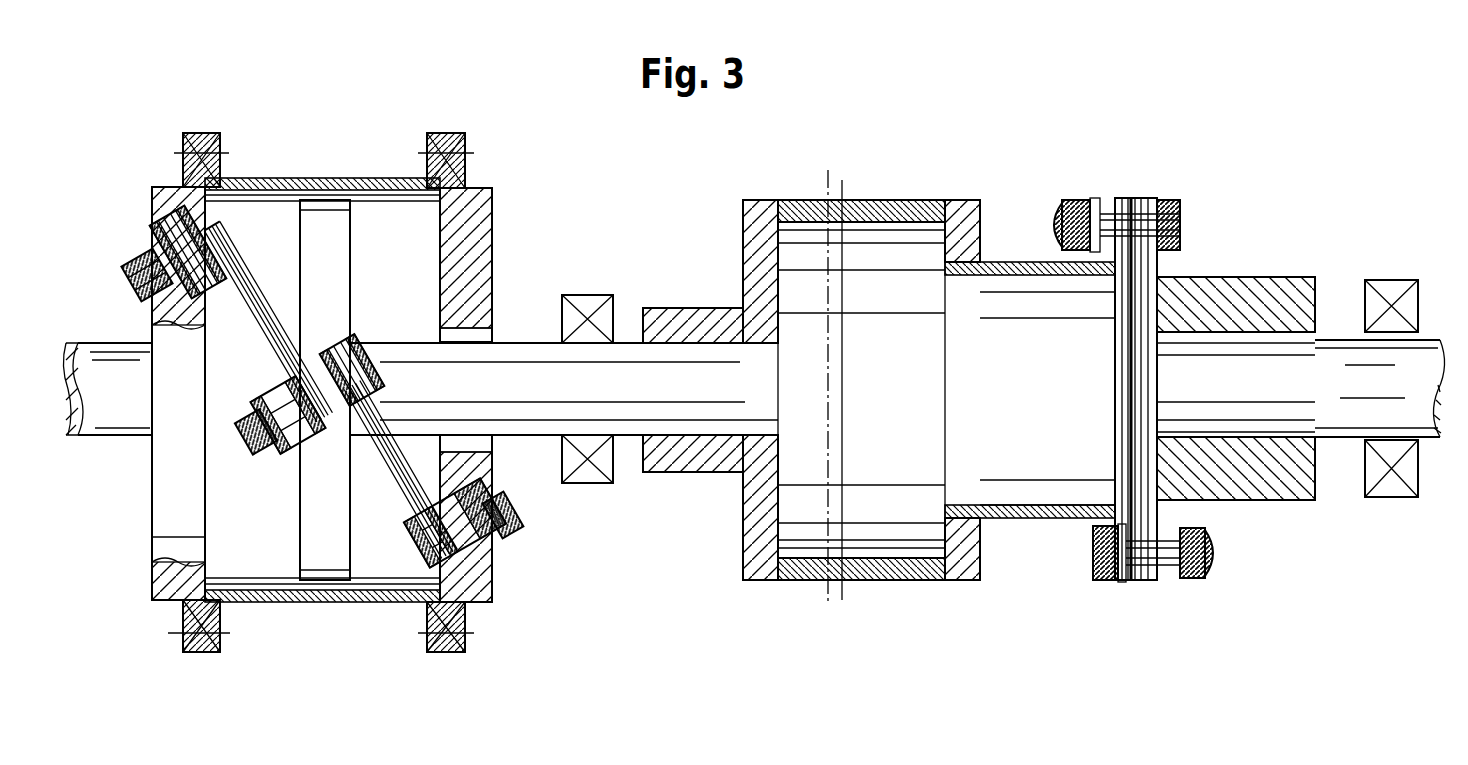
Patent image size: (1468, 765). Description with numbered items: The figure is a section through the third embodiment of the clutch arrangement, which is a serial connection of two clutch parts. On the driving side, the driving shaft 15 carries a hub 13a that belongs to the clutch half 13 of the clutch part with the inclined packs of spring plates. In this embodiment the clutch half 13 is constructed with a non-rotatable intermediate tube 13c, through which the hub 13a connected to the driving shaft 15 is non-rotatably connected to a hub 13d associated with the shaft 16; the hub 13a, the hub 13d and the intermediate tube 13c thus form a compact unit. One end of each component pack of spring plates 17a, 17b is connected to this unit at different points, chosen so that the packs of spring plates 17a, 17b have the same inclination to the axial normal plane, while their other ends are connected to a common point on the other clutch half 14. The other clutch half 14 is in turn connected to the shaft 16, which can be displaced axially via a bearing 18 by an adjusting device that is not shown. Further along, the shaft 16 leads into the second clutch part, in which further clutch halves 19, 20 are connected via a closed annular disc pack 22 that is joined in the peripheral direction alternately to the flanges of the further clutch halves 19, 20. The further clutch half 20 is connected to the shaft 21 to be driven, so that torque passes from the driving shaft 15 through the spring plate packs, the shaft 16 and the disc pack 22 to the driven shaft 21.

The clutch half 13 is at (167, 187).
The hub 13a is at (150, 601).
The intermediate tube 13c is at (295, 608).
The hub 13d is at (490, 190).
The clutch half 14 is at (330, 210).
The driving shaft 15 is at (98, 360).
The shaft 16 is at (542, 415).
The component pack of spring plates 17a is at (245, 283).
The component pack of spring plates 17b is at (402, 505).
The bearing 18 is at (598, 470).
The further clutch half 19 is at (887, 205).
The further clutch half 20 is at (1205, 295).
The shaft to be driven 21 is at (1332, 355).
The annular disc pack 22 is at (1135, 205).